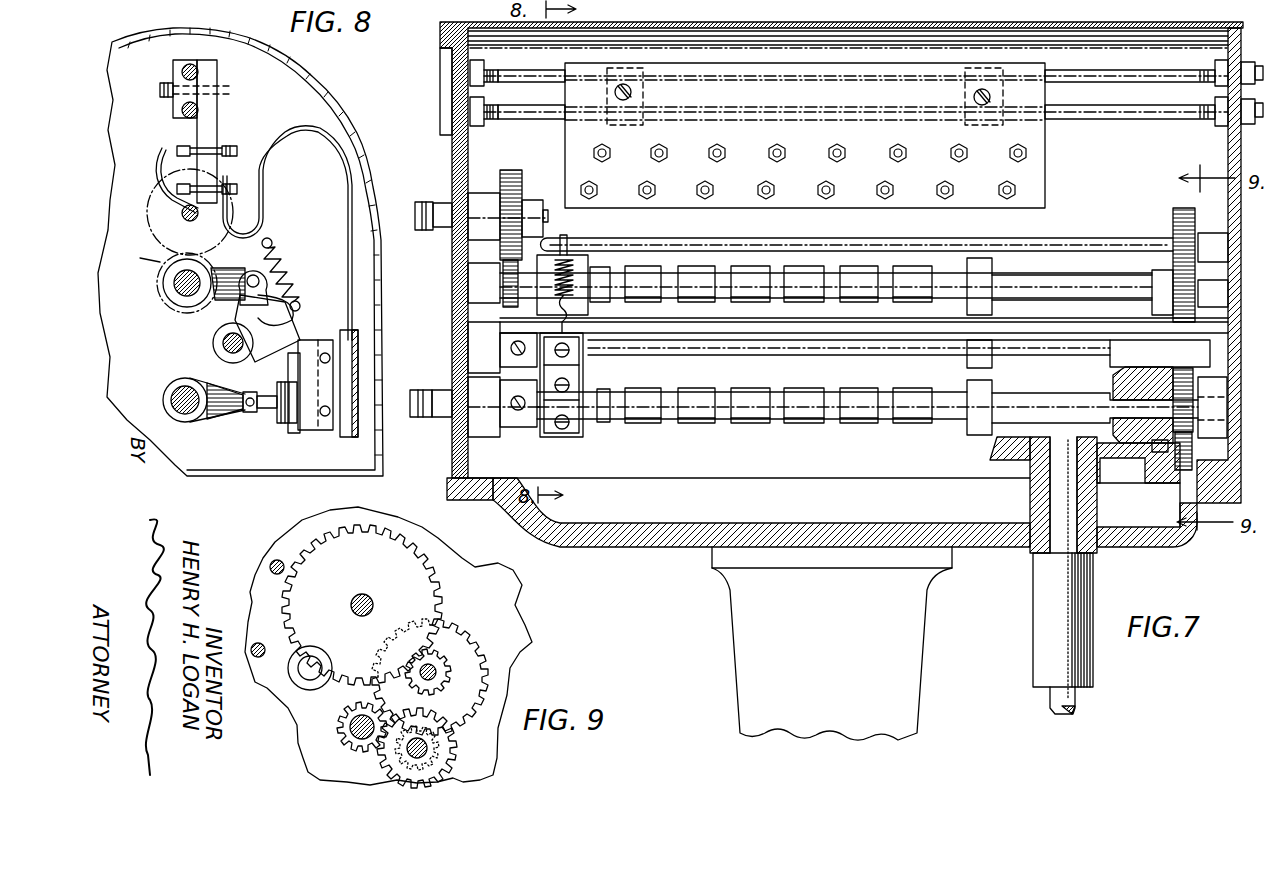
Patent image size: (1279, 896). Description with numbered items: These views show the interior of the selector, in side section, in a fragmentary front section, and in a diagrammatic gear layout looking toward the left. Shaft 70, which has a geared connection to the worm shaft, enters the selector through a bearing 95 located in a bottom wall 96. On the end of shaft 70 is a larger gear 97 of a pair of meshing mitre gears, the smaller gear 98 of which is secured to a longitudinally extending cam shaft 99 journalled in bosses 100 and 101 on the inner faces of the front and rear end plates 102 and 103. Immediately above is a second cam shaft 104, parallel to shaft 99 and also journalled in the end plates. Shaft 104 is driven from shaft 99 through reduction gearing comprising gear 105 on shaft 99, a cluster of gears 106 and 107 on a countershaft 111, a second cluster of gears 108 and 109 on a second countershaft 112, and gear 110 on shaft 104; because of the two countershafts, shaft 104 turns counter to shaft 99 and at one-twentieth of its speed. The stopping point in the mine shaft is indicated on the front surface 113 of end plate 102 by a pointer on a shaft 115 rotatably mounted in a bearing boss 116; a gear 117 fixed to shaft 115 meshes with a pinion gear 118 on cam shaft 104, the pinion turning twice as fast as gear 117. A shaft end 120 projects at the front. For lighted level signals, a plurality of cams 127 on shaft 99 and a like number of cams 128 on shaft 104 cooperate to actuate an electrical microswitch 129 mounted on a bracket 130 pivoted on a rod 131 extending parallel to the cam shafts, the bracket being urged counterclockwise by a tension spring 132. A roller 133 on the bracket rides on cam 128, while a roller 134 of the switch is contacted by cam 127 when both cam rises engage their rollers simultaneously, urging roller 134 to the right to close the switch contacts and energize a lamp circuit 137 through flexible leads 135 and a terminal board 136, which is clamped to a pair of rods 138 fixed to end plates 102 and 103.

In FIG. 7, the shaft 70 is at (1075, 698).
In FIG. 7, the bearing 95 is at (1050, 506).
In FIG. 7, the bottom wall 96 is at (995, 548).
In FIG. 7, the larger gear 97 is at (997, 453).
In FIG. 7, the smaller gear 98 is at (1123, 377).
In FIG. 7, the cam shaft 99 is at (867, 417).
In FIG. 8, the cam shaft 99 is at (170, 390).
In FIG. 9, the cam shaft 99 is at (342, 720).
In FIG. 7, the boss 100 is at (490, 436).
In FIG. 7, the boss 101 is at (1212, 375).
In FIG. 7, the front end plate 102 is at (452, 313).
In FIG. 7, the rear end plate 103 is at (1230, 155).
In FIG. 7, the second cam shaft 104 is at (864, 265).
In FIG. 8, the second cam shaft 104 is at (164, 283).
In FIG. 9, the second cam shaft 104 is at (380, 589).
In FIG. 7, the gear 105 is at (1177, 428).
In FIG. 9, the gear 105 is at (347, 738).
In FIG. 7, the gear 106 is at (1178, 442).
In FIG. 9, the gear 106 is at (460, 768).
In FIG. 7, the gear 107 is at (1150, 448).
In FIG. 9, the gear 107 is at (428, 748).
In FIG. 9, the gear 108 is at (486, 657).
In FIG. 9, the gear 109 is at (445, 662).
In FIG. 7, the gear 110 is at (1175, 222).
In FIG. 9, the gear 110 is at (442, 599).
In FIG. 9, the countershaft 111 is at (405, 750).
In FIG. 9, the second countershaft 112 is at (440, 673).
In FIG. 7, the front surface 113 is at (452, 161).
In FIG. 7, the shaft 115 is at (423, 231).
In FIG. 8, the shaft 115 is at (193, 227).
In FIG. 7, the bearing boss 116 is at (480, 200).
In FIG. 7, the gear 117 is at (514, 173).
In FIG. 8, the gear 117 is at (147, 204).
In FIG. 7, the pinion gear 118 is at (500, 276).
In FIG. 8, the pinion gear 118 is at (140, 258).
In FIG. 7, the shaft end 120 is at (428, 418).
In FIG. 7, the cams 127 is at (855, 425).
In FIG. 8, the cams 127 is at (225, 418).
In FIG. 7, the cams 128 is at (808, 268).
In FIG. 8, the cams 128 is at (230, 302).
In FIG. 7, the microswitch 129 is at (588, 350).
In FIG. 8, the microswitch 129 is at (305, 433).
In FIG. 8, the bracket 130 is at (292, 320).
In FIG. 7, the rod 131 is at (808, 345).
In FIG. 8, the rod 131 is at (213, 345).
In FIG. 7, the tension spring 132 is at (570, 262).
In FIG. 8, the tension spring 132 is at (285, 256).
In FIG. 8, the roller 133 is at (246, 276).
In FIG. 8, the roller 134 is at (250, 414).
In FIG. 8, the flexible leads 135 is at (305, 125).
In FIG. 7, the terminal board 136 is at (828, 144).
In FIG. 8, the terminal board 136 is at (210, 120).
In FIG. 8, the lamp circuit 137 is at (168, 163).
In FIG. 7, the rods 138 is at (1167, 78).
In FIG. 8, the rods 138 is at (195, 62).